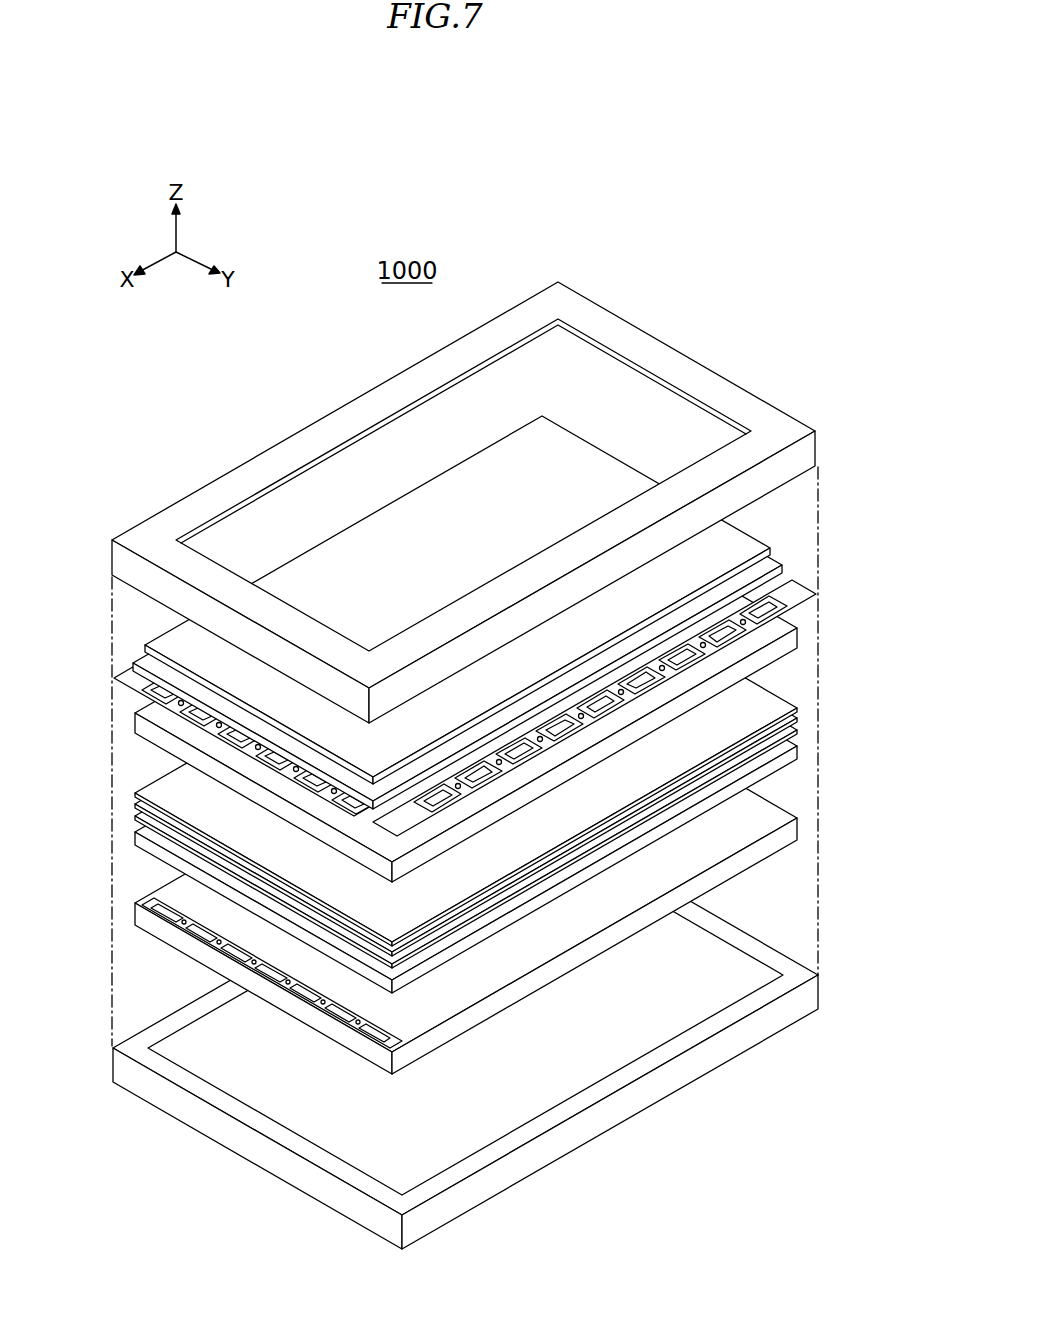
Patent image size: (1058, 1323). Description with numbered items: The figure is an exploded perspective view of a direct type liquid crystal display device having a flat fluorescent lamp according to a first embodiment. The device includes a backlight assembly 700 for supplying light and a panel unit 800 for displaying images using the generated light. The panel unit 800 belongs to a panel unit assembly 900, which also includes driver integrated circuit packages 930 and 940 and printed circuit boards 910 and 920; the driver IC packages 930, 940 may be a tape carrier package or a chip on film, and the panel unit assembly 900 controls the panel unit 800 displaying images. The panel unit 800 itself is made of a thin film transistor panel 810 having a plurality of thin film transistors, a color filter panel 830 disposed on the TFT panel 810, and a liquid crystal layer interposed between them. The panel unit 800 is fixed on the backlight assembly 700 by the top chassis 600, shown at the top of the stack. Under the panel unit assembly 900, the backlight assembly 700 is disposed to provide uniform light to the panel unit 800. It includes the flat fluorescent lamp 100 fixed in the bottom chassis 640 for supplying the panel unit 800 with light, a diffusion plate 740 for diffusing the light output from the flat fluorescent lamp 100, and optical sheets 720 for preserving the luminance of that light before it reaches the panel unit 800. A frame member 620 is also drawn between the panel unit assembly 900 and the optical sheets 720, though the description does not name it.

The top chassis 600 is at (687, 353).
The panel unit 800 is at (458, 622).
The color filter panel 830 is at (767, 553).
The thin film transistor (TFT) panel 810 is at (780, 563).
The panel unit assembly 900 is at (458, 707).
The printed circuit board 910 is at (123, 685).
The driver integrated circuit (IC) package 930 is at (137, 667).
The driver integrated circuit (IC) package 940 is at (800, 590).
The printed circuit board 920 is at (812, 614).
The mold frame 620 is at (137, 718).
The backlight assembly 700 is at (483, 776).
The optical sheets 720 is at (805, 705).
The diffusion plate 740 is at (793, 753).
The flat fluorescent lamp 100 is at (137, 920).
The bottom chassis 640 is at (818, 1005).